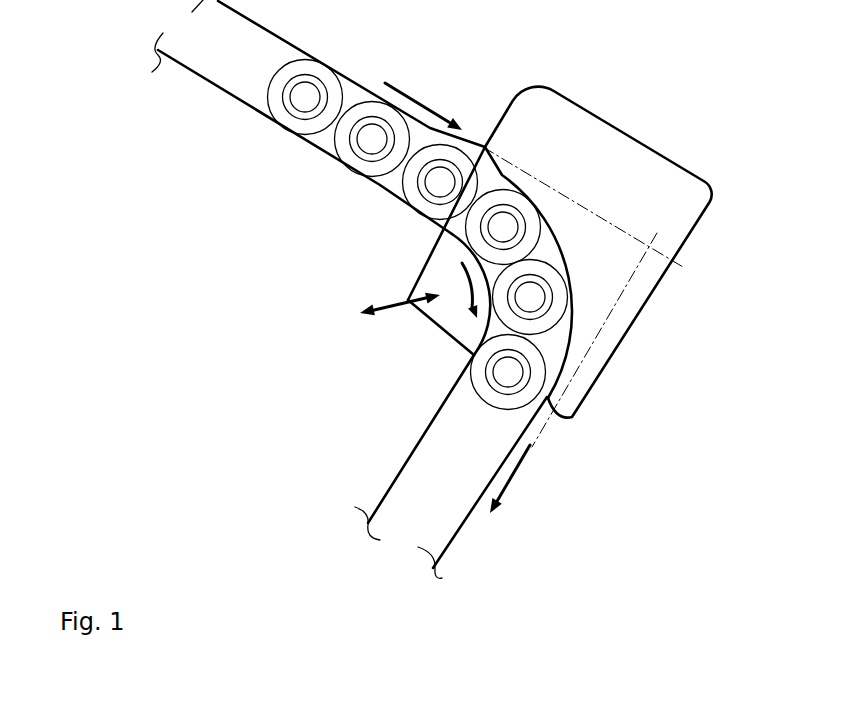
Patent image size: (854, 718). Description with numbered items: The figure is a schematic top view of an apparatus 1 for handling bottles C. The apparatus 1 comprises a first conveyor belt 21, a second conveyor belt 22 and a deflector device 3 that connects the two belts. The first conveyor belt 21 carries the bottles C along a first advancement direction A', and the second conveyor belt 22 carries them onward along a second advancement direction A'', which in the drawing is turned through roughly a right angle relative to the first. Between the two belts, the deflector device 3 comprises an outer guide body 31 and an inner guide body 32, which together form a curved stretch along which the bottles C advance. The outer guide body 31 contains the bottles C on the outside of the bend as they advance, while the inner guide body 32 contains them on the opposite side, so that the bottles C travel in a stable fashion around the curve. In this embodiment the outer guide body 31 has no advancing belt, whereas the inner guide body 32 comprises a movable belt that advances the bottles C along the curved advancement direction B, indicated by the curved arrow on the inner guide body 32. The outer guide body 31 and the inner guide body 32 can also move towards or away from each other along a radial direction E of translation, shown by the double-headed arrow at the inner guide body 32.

The apparatus for handling bottles 1 is at (128, 286).
The first conveyor belt 21 is at (347, 72).
The second conveyor belt 22 is at (413, 438).
The deflector device 3 is at (648, 112).
The outer guide body 31 is at (697, 232).
The inner guide body 32 is at (427, 263).
The bottles C is at (287, 128).
The first advancement direction A' is at (426, 91).
The second advancement direction A'' is at (515, 493).
The curved advancement direction B is at (463, 290).
The radial direction of translation E is at (398, 320).